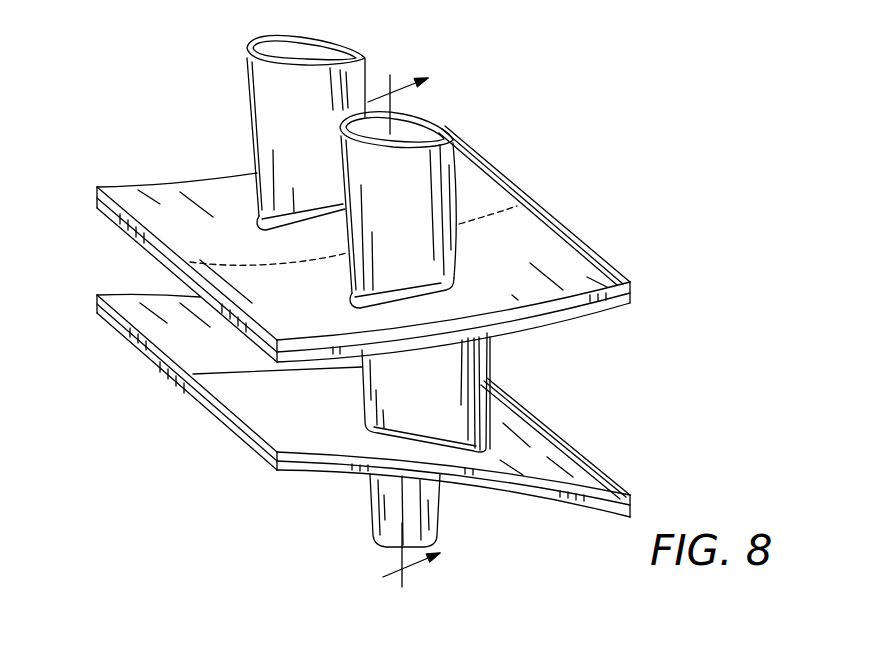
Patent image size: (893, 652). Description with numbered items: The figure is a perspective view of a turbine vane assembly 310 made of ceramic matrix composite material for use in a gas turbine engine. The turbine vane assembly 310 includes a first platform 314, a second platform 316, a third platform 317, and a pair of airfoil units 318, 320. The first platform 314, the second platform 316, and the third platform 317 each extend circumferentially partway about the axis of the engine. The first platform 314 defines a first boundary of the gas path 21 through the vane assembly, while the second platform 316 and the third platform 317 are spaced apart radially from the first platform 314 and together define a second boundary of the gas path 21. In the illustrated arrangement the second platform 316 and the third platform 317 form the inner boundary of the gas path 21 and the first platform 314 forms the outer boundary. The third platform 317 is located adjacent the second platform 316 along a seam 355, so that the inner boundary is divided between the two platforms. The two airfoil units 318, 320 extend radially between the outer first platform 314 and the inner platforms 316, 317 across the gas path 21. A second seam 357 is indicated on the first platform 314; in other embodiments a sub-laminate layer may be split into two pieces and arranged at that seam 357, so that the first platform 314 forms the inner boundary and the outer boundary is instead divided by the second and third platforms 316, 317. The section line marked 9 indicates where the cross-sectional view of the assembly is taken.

The turbine vane assembly 310 is at (386, 310).
The first platform 314 is at (587, 233).
The second platform 316 is at (593, 456).
The third platform 317 is at (112, 341).
The airfoil unit 318 is at (499, 362).
The airfoil unit 320 is at (365, 53).
The seam 355 is at (197, 362).
The seam 357 is at (517, 205).
The gas path 21 is at (594, 358).
The section line 9- 9 is at (403, 336).